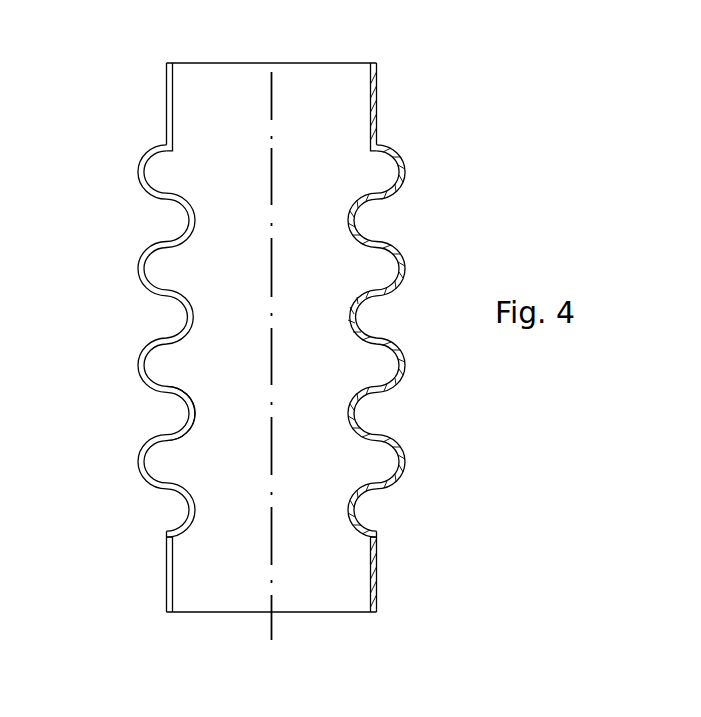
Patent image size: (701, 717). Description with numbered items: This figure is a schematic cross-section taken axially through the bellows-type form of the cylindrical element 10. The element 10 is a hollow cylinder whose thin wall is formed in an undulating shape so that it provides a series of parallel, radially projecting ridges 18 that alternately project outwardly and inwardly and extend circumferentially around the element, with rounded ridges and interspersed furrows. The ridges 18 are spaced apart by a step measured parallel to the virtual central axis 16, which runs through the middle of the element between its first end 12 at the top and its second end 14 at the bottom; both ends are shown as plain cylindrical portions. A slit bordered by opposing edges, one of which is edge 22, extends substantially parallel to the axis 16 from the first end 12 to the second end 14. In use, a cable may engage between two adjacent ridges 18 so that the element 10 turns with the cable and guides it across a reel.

The cylindrical element 10 is at (497, 158).
The first end 12 is at (182, 63).
The second end 14 is at (197, 613).
The virtual central axis 16 is at (272, 640).
The radially projecting ridges 18 is at (140, 170).
The opposing edge 22 is at (192, 418).